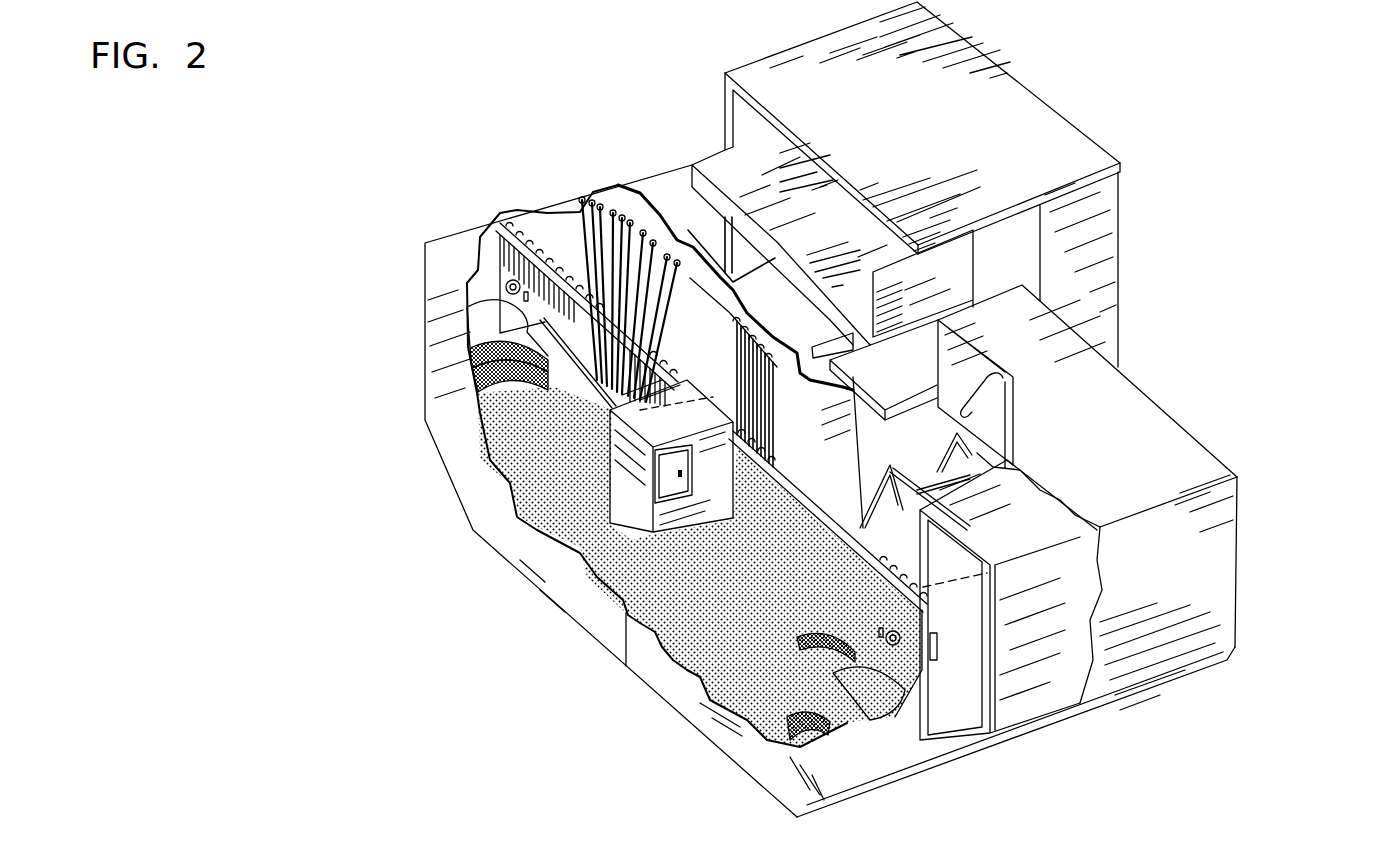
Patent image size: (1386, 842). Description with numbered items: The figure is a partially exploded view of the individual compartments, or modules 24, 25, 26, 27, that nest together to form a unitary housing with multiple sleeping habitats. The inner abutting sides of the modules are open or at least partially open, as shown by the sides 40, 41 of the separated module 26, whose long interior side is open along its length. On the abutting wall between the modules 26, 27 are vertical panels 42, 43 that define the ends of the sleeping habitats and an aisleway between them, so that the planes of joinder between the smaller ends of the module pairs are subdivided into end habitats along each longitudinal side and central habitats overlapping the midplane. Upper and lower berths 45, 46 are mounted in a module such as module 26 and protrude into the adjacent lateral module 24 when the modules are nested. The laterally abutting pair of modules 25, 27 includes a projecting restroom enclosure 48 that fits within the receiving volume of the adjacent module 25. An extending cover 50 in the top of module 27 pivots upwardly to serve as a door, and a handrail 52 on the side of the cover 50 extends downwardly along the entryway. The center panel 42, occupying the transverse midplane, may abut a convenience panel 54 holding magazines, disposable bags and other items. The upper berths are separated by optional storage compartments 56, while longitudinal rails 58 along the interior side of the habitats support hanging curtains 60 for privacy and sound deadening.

The module 24 is at (422, 291).
The module 25 is at (697, 700).
The module 26 is at (995, 108).
The module 27 is at (1205, 583).
The side 40 is at (745, 100).
The side 41 is at (1073, 192).
The vertical panel 42 is at (955, 266).
The vertical panel 43 is at (1095, 290).
The upper berth 45 is at (727, 170).
The lower berth 46 is at (760, 278).
The restroom enclosure 48 is at (1020, 688).
The extending cover 50 is at (1012, 415).
The handrail 52 is at (960, 393).
The convenience panel 54 is at (835, 458).
The storage compartment 56 is at (637, 513).
The longitudinal rail 58 is at (505, 228).
The hanging curtain 60 is at (605, 235).